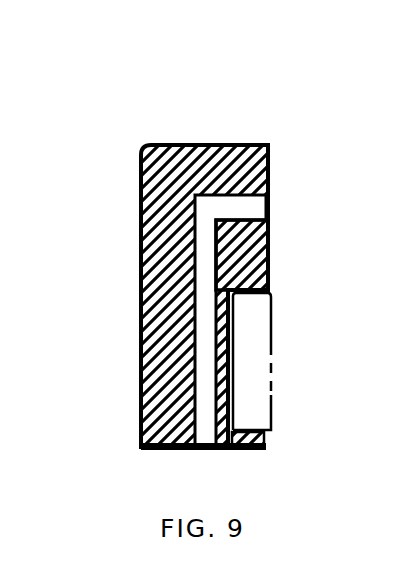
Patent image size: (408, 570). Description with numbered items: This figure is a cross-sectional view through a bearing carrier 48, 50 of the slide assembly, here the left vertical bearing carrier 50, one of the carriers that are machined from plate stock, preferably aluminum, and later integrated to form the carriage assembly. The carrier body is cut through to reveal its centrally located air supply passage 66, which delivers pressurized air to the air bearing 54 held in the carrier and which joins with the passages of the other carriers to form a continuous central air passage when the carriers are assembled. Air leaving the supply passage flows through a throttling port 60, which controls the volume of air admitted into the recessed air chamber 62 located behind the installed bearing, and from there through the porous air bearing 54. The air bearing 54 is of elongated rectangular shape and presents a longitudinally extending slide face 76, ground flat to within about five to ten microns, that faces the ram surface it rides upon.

The bearing carrier 48 is at (203, 122).
The left vertical bearing carrier 50 is at (203, 122).
The air supply passage 66 is at (212, 278).
The throttling port 60 is at (228, 353).
The recessed air chamber 62 is at (222, 412).
The air bearing 54 is at (276, 311).
The slide face 76 is at (272, 433).